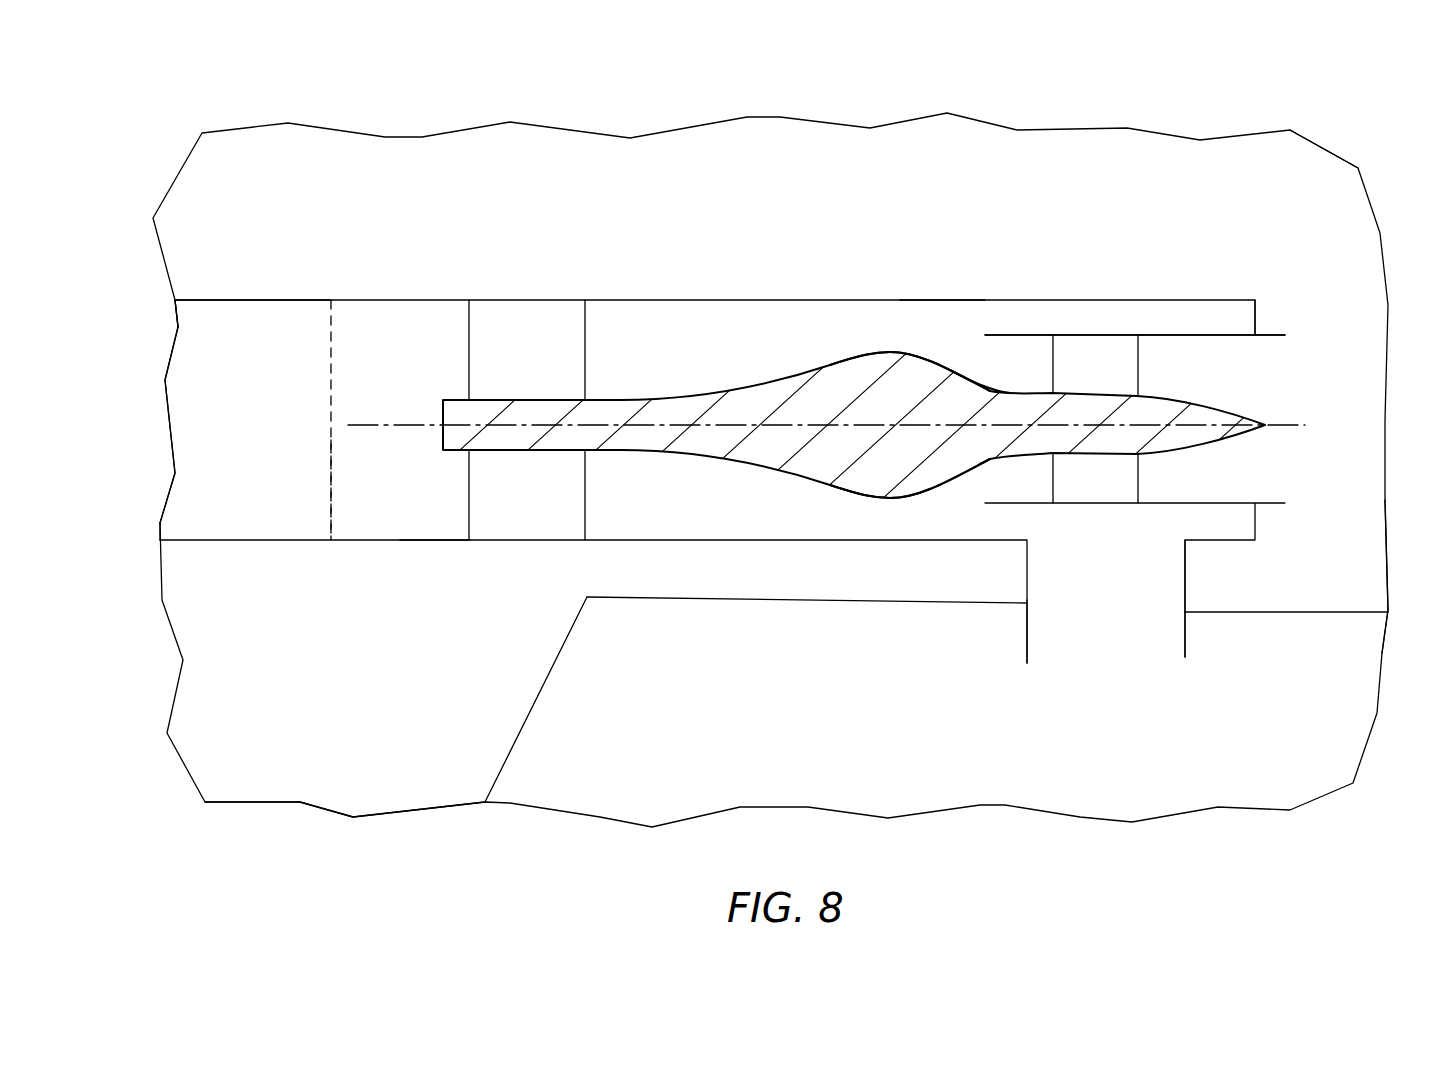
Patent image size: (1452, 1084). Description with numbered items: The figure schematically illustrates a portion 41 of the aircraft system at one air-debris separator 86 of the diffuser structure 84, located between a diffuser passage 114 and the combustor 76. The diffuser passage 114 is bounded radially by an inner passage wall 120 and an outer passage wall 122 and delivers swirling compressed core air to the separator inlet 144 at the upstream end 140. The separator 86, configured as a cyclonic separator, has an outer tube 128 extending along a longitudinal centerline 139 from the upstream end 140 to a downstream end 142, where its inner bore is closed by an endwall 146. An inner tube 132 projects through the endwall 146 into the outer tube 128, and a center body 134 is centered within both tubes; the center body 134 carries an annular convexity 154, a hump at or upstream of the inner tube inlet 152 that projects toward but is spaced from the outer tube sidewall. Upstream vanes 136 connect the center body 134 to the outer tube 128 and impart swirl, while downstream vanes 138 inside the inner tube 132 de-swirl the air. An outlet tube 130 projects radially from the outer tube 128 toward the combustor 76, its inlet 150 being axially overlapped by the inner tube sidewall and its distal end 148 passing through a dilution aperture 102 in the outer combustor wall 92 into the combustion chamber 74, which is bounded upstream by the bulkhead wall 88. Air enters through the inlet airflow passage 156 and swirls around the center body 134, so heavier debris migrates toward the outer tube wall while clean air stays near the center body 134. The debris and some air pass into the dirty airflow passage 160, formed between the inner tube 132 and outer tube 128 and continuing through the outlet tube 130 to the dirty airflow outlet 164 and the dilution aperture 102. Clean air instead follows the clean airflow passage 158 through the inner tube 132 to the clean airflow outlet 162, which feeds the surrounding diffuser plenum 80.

The vacuum chamber housing 41 is at (1107, 145).
The combustion chamber 74 is at (860, 755).
The combustor 76 is at (1360, 605).
The diffuser plenum 80 is at (1190, 207).
The diffuser structure 84 is at (227, 297).
The air-debris separator 86 is at (941, 296).
The combustor bulkhead wall 88 is at (527, 718).
The outer combustor wall 92 is at (1372, 613).
The dilution aperture 102 is at (1187, 633).
The diffuser passage 114 is at (255, 433).
The inner passage wall 120 is at (190, 540).
The outer passage wall 122 is at (210, 302).
The outer tube 128 is at (762, 300).
The outlet tube 130 is at (1025, 572).
The inner tube 132 is at (1270, 335).
The center body 134 is at (735, 390).
The upstream vane 136 is at (466, 318).
The downstream vane 138 is at (1140, 366).
The longitudinal centerline 139 is at (373, 428).
The upstream end 140 is at (330, 330).
The downstream end 142 is at (1283, 336).
The separator inlet 144 is at (330, 462).
The endwall 146 is at (1258, 318).
The distal end 148 is at (1027, 663).
The outlet tube inlet 150 is at (1050, 548).
The inner tube inlet 152 is at (985, 367).
The annular convexity 154 is at (880, 350).
The inlet airflow passage 156 is at (433, 519).
The clean airflow passage 158 is at (1257, 381).
The dirty airflow passage 160 is at (1103, 655).
The clean airflow outlet 162 is at (1272, 466).
The dirty airflow outlet 164 is at (1147, 652).